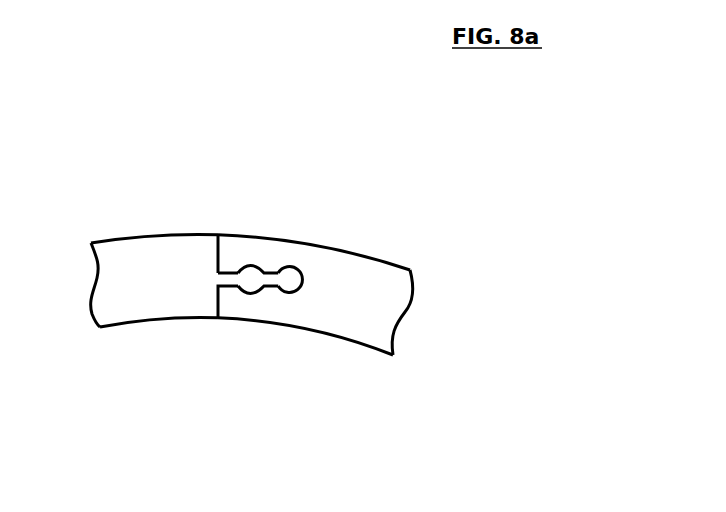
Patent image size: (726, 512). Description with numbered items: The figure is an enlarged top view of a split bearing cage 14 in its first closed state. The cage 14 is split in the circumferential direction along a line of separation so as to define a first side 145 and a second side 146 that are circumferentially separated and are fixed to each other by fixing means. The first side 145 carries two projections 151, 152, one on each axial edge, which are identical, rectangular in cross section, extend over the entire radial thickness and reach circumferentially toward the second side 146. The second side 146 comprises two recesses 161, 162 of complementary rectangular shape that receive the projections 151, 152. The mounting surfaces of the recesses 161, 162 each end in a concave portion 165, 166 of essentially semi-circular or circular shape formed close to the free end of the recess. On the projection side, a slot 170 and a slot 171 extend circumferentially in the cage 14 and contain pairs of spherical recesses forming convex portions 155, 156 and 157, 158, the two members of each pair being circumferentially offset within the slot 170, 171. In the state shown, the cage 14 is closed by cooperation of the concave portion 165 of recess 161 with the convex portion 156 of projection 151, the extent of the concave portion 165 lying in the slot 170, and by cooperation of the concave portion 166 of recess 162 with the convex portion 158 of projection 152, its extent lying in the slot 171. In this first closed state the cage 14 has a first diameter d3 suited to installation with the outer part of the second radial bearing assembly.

The cage 14 is at (432, 343).
The first side 145 is at (331, 247).
The second side 146 is at (188, 229).
The projection 151 is at (284, 216).
The projection 152 is at (277, 250).
The convex portion 155 is at (182, 321).
The convex portion 157 is at (216, 285).
The convex portion 156 is at (356, 254).
The convex portion 158 is at (304, 286).
The recess 161 is at (235, 196).
The recess 162 is at (222, 244).
The concave portion 165 is at (255, 353).
The concave portion 166 is at (288, 294).
The slot 170 is at (155, 243).
The slot 171 is at (213, 283).
The first diameter d3 is at (327, 343).